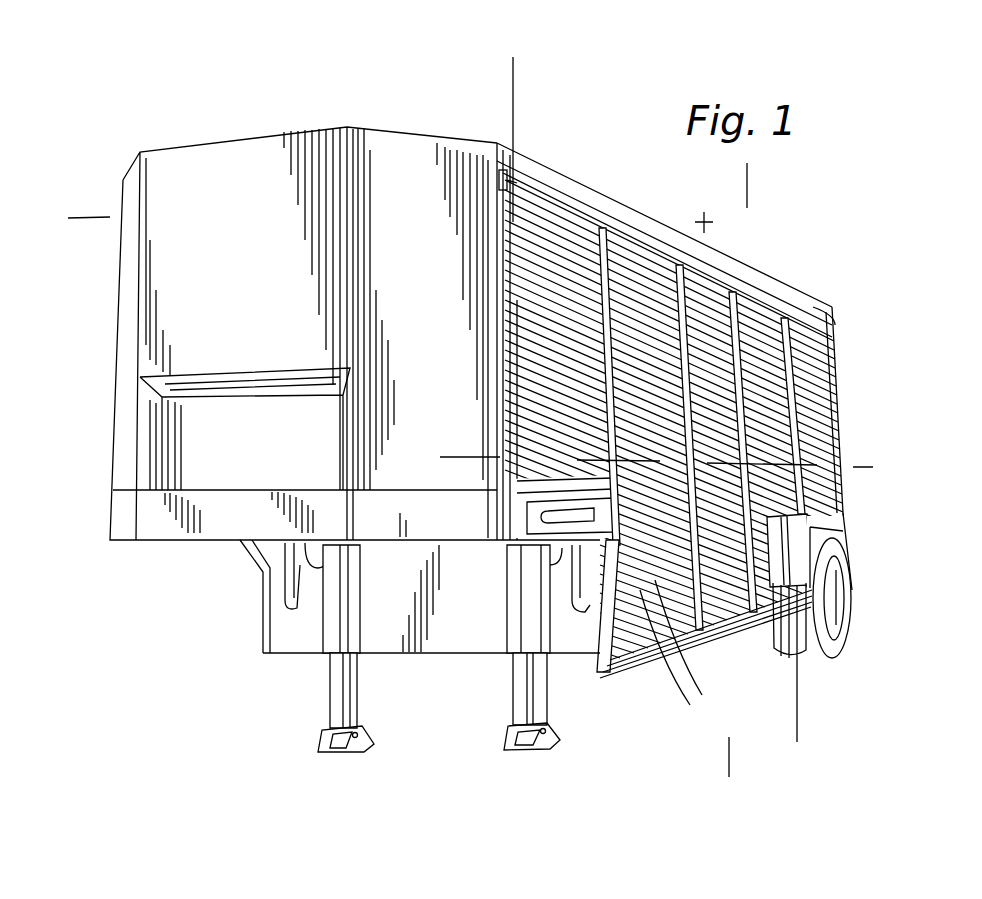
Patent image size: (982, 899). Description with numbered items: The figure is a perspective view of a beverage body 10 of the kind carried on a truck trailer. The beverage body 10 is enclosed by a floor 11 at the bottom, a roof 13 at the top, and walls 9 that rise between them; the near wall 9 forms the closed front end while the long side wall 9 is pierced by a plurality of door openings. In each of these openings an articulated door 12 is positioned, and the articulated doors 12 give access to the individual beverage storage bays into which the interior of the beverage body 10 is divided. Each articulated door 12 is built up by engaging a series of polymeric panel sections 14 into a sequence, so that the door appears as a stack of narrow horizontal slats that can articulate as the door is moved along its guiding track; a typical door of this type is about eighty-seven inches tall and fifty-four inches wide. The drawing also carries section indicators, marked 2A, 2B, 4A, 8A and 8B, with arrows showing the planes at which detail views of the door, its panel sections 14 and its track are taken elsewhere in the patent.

The walls 9 is at (377, 157).
The beverage body 10 is at (215, 589).
The floor 11 is at (426, 657).
The articulated door 12 is at (636, 268).
The roof 13 is at (523, 152).
The polymeric panel section 14 is at (690, 659).
The section line 2A is at (98, 214).
The section line 2B is at (695, 148).
The section line 4A is at (509, 72).
The section line 8A is at (450, 455).
The section line 8B is at (722, 462).